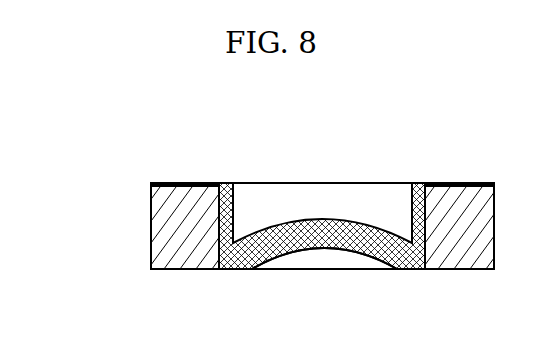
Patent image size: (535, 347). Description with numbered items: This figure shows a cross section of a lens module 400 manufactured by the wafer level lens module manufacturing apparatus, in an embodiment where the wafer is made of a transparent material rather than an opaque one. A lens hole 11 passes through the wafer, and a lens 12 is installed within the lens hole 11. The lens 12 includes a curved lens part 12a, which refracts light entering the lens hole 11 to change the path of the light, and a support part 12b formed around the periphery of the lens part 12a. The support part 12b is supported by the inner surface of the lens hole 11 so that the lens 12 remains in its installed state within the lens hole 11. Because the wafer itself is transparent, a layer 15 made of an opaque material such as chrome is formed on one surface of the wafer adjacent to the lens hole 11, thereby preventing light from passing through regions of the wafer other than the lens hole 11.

The lens module 400 is at (133, 221).
The layer 15 is at (462, 185).
The lens 12 is at (353, 210).
The support part 12b is at (234, 209).
The lens part 12a is at (348, 242).
The lens hole 11 is at (412, 258).